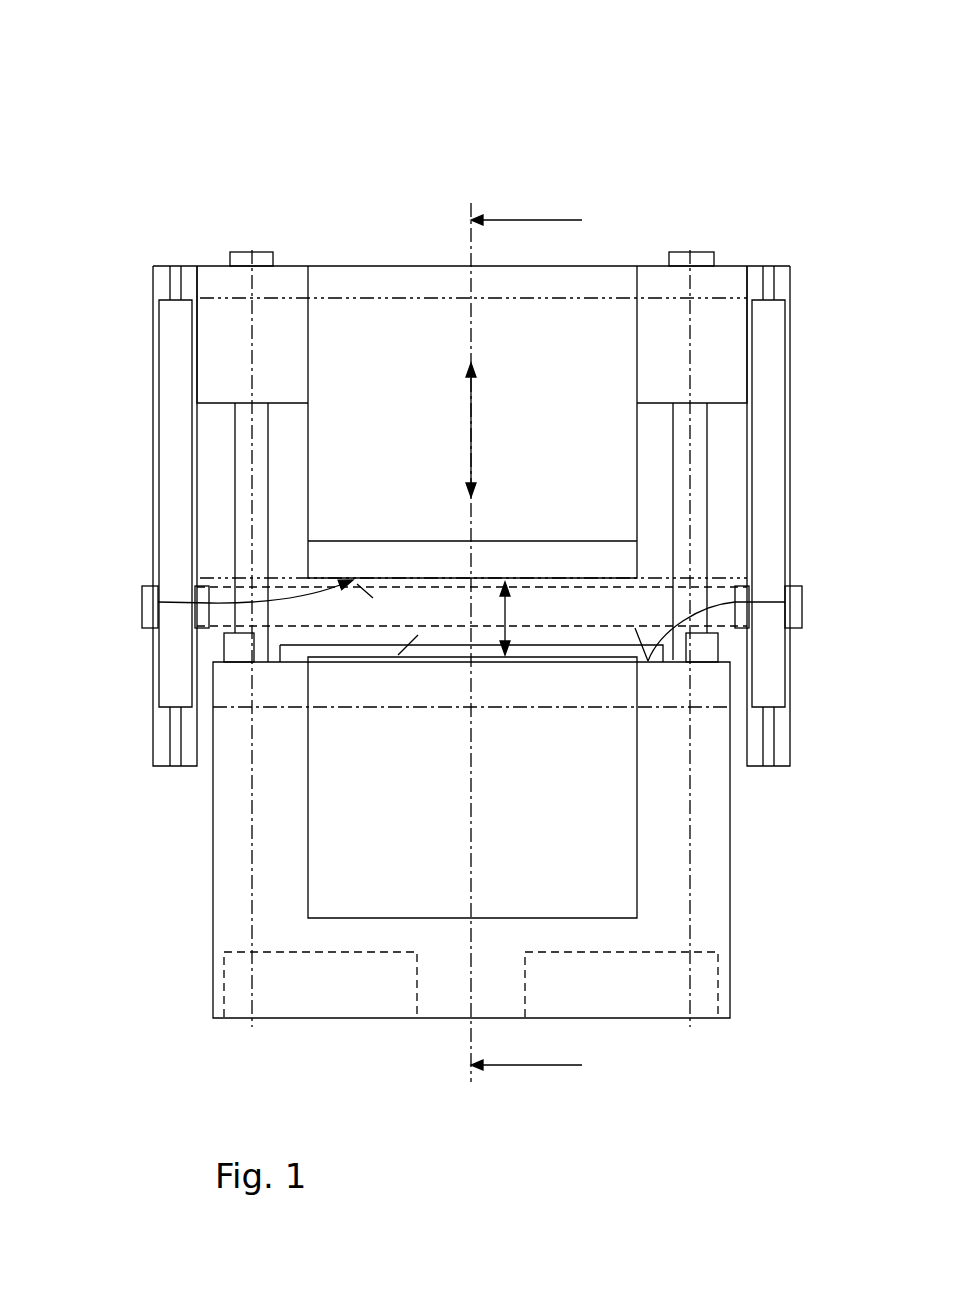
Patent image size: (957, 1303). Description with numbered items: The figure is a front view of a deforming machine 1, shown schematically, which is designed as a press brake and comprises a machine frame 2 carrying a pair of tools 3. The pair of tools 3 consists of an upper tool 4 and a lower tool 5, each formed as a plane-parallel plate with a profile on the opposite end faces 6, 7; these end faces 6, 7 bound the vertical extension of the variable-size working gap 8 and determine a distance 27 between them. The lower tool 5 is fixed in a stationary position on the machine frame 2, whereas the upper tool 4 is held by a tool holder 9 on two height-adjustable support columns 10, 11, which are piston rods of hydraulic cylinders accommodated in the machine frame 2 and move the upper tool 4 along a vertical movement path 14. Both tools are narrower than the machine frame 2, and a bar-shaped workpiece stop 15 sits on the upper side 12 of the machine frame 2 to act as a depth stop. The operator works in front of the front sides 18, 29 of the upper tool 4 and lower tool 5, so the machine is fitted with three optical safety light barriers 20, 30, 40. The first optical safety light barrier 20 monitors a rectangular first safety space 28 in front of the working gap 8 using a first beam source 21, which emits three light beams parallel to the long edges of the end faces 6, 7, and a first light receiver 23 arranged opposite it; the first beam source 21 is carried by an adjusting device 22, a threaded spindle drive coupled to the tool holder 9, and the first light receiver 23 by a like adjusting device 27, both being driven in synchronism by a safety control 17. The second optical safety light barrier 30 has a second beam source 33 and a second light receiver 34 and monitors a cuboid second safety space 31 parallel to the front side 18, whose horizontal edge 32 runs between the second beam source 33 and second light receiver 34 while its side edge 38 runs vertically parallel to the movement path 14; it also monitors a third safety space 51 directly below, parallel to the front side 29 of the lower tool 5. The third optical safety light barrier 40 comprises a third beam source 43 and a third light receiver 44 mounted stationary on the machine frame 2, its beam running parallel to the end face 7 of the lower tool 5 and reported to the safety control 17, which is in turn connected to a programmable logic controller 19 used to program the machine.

The deforming machine 1 is at (726, 118).
The machine frame 2 is at (440, 1006).
The pair of tools 3 is at (357, 245).
The upper tool 4 is at (544, 325).
The lower tool 5 is at (598, 812).
The end face 6 is at (143, 602).
The end face 7 is at (398, 655).
The working gap 8 is at (580, 610).
The tool holder 9 is at (207, 275).
The support column 10 is at (240, 253).
The support column 11 is at (677, 253).
The upper side 12 is at (802, 603).
The movement path 14 is at (471, 422).
The workpiece stop 15 is at (295, 653).
The safety control 17 is at (278, 982).
The front side 18 is at (588, 464).
The programmable logic controller 19 is at (705, 990).
The first optical safety light barrier 20 is at (130, 638).
The first beam source 21 is at (787, 603).
The adjusting device 22 is at (783, 302).
The first light receiver 23 is at (150, 597).
The adjusting device 27 is at (165, 277).
The first safety space 28 is at (235, 587).
The front side 29 is at (555, 759).
The second optical safety light barrier 30 is at (131, 388).
The second safety space 31 is at (319, 300).
The edge 32 is at (601, 297).
The second beam source 33 is at (768, 345).
The second light receiver 34 is at (172, 355).
The side edge 38 is at (192, 450).
The third optical safety light barrier 40 is at (223, 686).
The third beam source 43 is at (710, 645).
The third light receiver 44 is at (233, 653).
The third safety space 51 is at (650, 578).